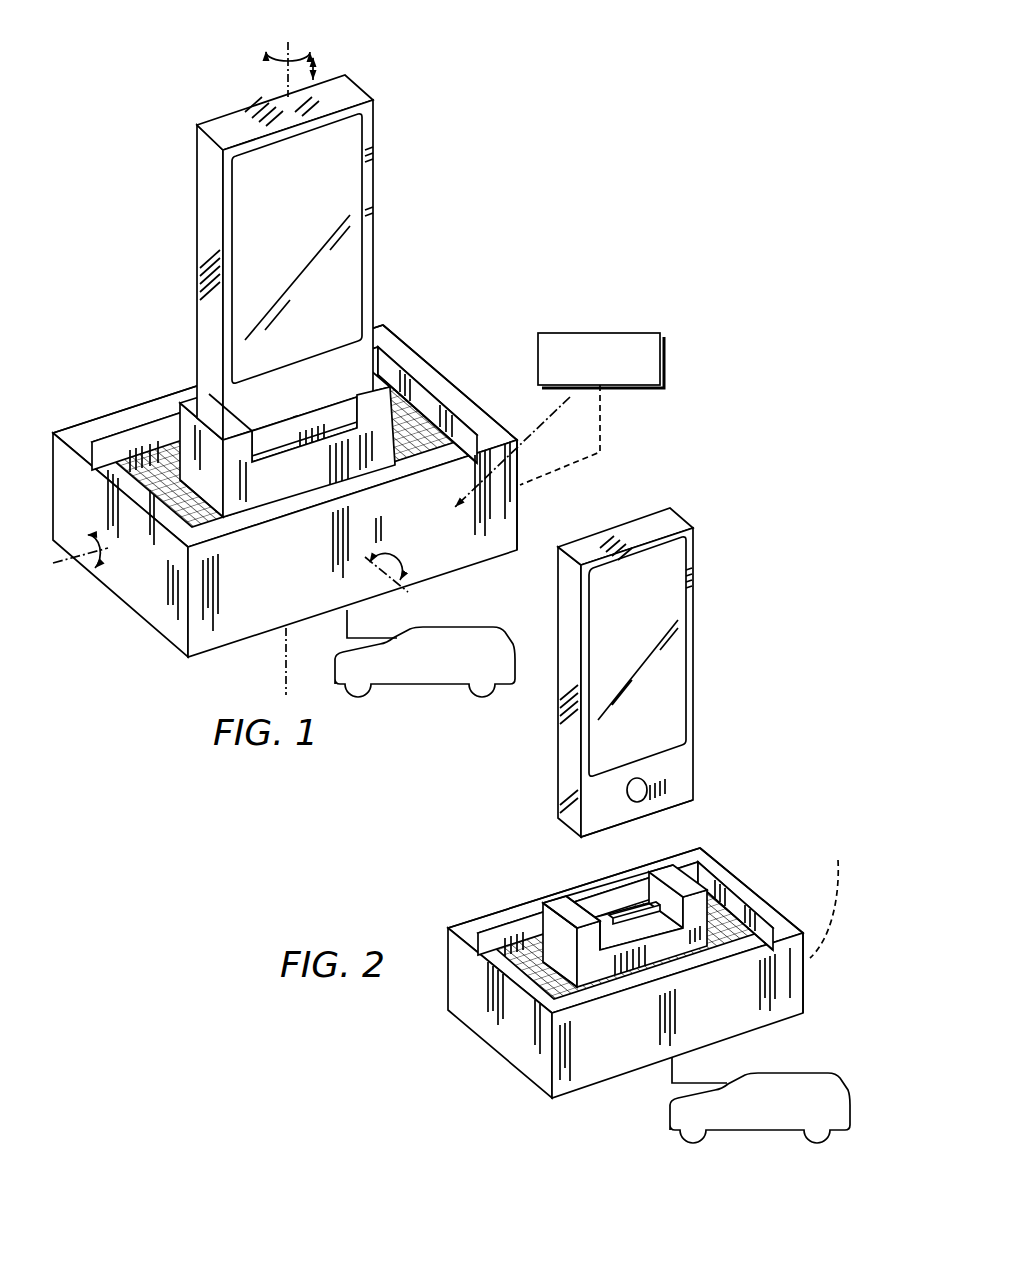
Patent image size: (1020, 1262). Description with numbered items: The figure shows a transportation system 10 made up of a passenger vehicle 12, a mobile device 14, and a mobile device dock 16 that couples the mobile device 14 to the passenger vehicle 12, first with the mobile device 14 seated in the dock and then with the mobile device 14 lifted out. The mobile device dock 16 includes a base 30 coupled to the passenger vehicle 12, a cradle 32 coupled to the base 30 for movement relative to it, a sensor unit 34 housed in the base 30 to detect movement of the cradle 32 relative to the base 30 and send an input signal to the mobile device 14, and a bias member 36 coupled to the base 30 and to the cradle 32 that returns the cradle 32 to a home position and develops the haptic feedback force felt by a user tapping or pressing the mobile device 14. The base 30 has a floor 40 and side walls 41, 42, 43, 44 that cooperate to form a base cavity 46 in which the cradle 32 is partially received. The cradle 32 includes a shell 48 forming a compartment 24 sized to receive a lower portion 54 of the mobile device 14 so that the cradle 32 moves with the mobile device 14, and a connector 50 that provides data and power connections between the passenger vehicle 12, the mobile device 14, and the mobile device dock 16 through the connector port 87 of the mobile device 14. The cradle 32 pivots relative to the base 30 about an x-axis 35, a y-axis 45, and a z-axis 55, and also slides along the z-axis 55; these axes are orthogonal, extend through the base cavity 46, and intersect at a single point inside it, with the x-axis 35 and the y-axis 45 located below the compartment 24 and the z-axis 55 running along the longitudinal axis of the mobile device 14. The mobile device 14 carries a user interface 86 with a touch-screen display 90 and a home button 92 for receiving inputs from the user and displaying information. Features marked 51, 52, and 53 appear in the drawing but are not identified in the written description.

In FIG. 1, the transportation system 10 is at (482, 150).
In FIG. 2, the transportation system 10 is at (722, 497).
In FIG. 1, the passenger vehicle 12 is at (488, 627).
In FIG. 2, the passenger vehicle 12 is at (760, 1093).
In FIG. 1, the mobile device 14 is at (382, 108).
In FIG. 2, the mobile device 14 is at (699, 537).
In FIG. 1, the mobile device dock 16 is at (507, 370).
In FIG. 2, the mobile device dock 16 is at (835, 842).
In FIG. 2, the compartment 24 is at (600, 910).
In FIG. 1, the base 30 is at (408, 330).
In FIG. 2, the base 30 is at (713, 843).
In FIG. 1, the cradle 32 is at (396, 376).
In FIG. 2, the cradle 32 is at (703, 884).
In FIG. 1, the sensor unit 34 is at (545, 333).
In FIG. 2, the sensor unit 34 is at (831, 896).
In FIG. 1, the x-axis 35 is at (405, 590).
In FIG. 1, the bias member 36 is at (410, 412).
In FIG. 2, the bias member 36 is at (721, 924).
In FIG. 1, the floor 40 is at (212, 652).
In FIG. 2, the floor 40 is at (565, 1100).
In FIG. 1, the side wall 41 is at (168, 618).
In FIG. 2, the side wall 41 is at (535, 1058).
In FIG. 1, the side wall 42 is at (109, 402).
In FIG. 2, the side wall 42 is at (472, 908).
In FIG. 1, the side wall 43 is at (524, 434).
In FIG. 2, the side wall 43 is at (789, 906).
In FIG. 1, the side wall 44 is at (478, 514).
In FIG. 2, the side wall 44 is at (771, 996).
In FIG. 1, the y-axis 45 is at (62, 566).
In FIG. 1, the base cavity 46 is at (140, 421).
In FIG. 2, the base cavity 46 is at (511, 922).
In FIG. 1, the shell 48 is at (190, 455).
In FIG. 2, the shell 48 is at (567, 952).
In FIG. 2, the connector 50 is at (660, 906).
In FIG. 1, the cradle side wall 51 is at (182, 427).
In FIG. 2, the cradle side wall 51 is at (545, 920).
In FIG. 1, the cradle top edge 52 is at (194, 398).
In FIG. 2, the cradle top edge 52 is at (548, 898).
In FIG. 1, the recess floor edge 53 is at (410, 446).
In FIG. 2, the recess floor edge 53 is at (718, 966).
In FIG. 1, the lower portion 54 is at (338, 460).
In FIG. 2, the lower portion 54 is at (702, 758).
In FIG. 1, the z-axis 55 is at (288, 82).
In FIG. 1, the user interface 86 is at (335, 200).
In FIG. 2, the user interface 86 is at (700, 612).
In FIG. 2, the connector port 87 is at (600, 840).
In FIG. 1, the touch-screen display 90 is at (322, 150).
In FIG. 2, the touch-screen display 90 is at (662, 570).
In FIG. 1, the home button 92 is at (300, 437).
In FIG. 2, the home button 92 is at (642, 788).